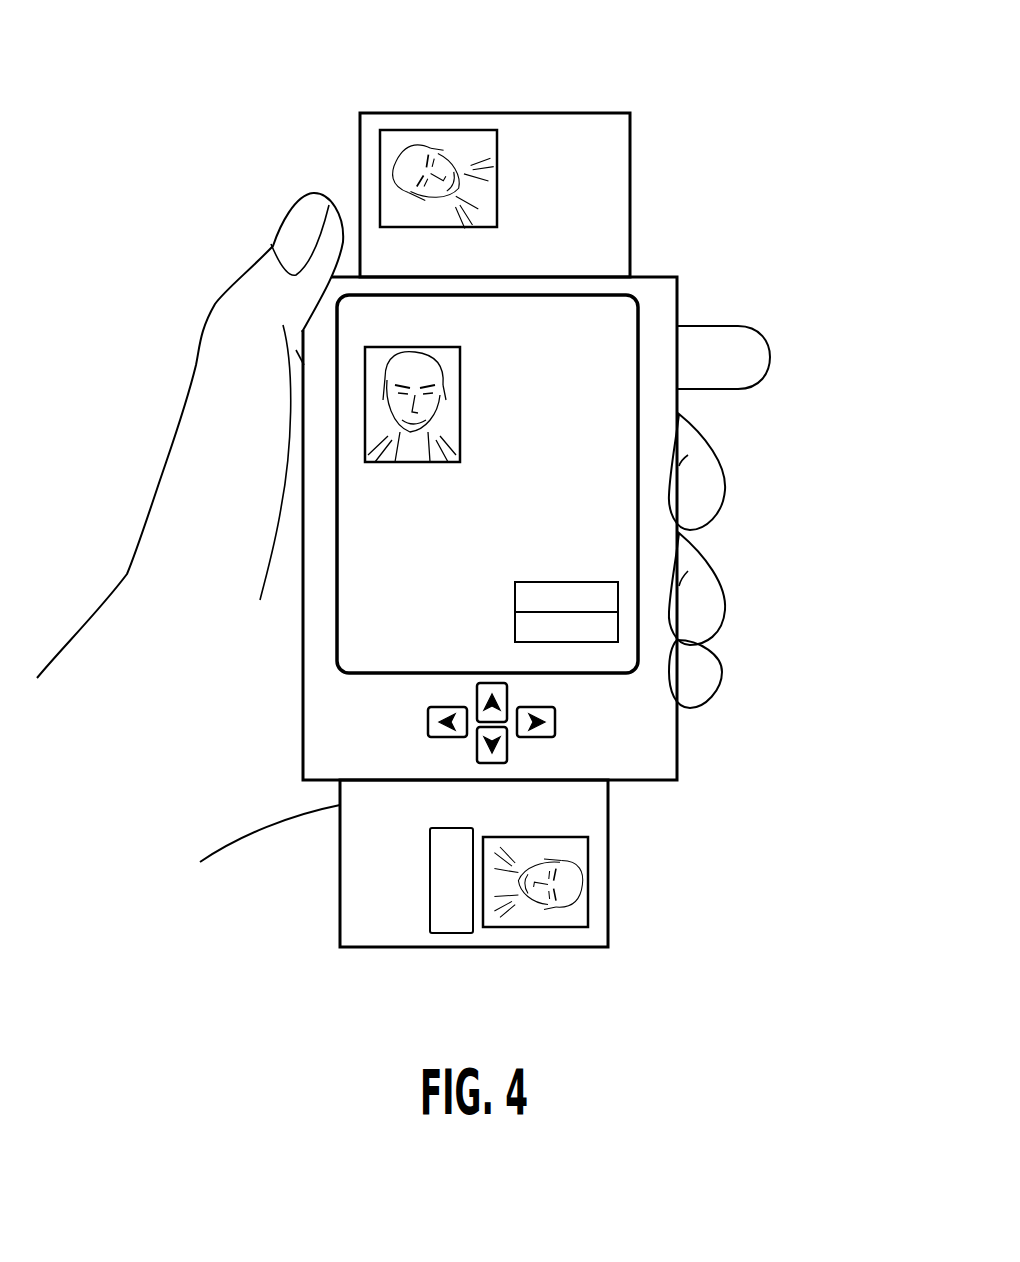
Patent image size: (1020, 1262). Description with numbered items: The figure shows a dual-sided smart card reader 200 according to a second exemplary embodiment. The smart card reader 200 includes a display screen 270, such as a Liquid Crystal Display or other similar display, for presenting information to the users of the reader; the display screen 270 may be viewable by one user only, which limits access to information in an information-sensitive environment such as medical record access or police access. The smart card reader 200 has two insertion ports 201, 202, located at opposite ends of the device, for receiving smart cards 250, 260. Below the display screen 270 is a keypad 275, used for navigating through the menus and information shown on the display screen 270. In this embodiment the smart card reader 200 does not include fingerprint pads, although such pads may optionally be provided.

The dual-sided smart card reader 200 is at (722, 256).
The insertion port 201 is at (322, 832).
The insertion port 202 is at (632, 88).
The smart card 250 is at (608, 850).
The smart card 260 is at (378, 112).
The display screen 270 is at (617, 553).
The keypad 275 is at (520, 750).